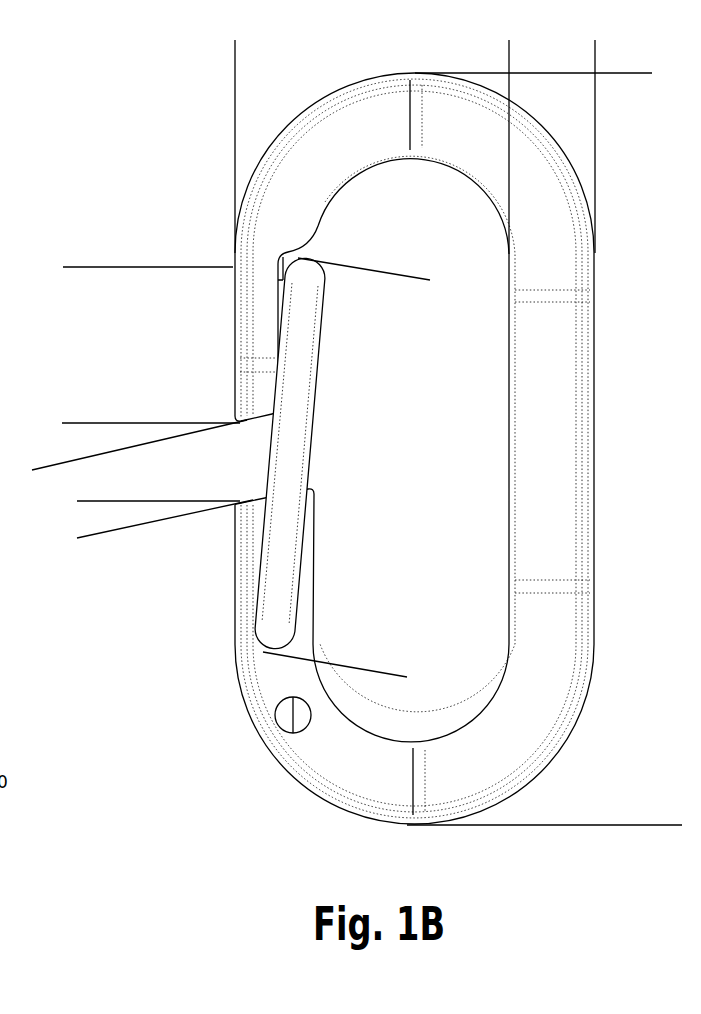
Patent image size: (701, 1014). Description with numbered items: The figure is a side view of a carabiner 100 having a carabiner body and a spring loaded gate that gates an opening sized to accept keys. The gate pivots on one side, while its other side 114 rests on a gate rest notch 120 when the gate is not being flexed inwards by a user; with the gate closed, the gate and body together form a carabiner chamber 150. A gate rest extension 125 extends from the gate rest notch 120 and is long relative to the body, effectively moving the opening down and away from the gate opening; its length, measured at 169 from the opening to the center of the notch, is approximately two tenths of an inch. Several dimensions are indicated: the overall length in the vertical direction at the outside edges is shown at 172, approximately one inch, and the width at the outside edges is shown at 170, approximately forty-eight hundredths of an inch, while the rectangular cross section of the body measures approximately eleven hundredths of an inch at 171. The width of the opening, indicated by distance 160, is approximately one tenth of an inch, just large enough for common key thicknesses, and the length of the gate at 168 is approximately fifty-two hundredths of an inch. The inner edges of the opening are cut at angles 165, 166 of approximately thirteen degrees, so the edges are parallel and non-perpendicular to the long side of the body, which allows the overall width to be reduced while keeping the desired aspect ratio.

The carabiner 100 is at (217, 171).
The other side of gate 114 is at (320, 275).
The gate rest notch 120 is at (282, 262).
The gate rest extension 125 is at (253, 337).
The carabiner chamber 150 is at (443, 395).
The width of opening 160 is at (122, 435).
The angle 165 is at (92, 491).
The angle 166 is at (64, 416).
The length of gate 168 is at (378, 258).
The gate rest extension measurement 169 is at (95, 257).
The width 170 is at (226, 55).
The cross section dimension 171 is at (500, 68).
The overall length 172 is at (645, 64).